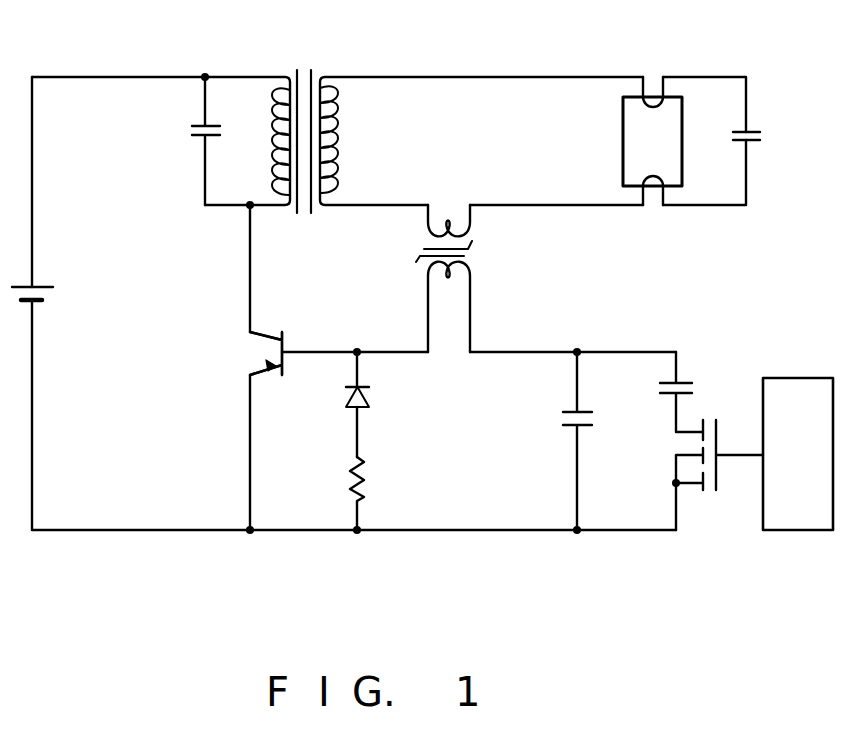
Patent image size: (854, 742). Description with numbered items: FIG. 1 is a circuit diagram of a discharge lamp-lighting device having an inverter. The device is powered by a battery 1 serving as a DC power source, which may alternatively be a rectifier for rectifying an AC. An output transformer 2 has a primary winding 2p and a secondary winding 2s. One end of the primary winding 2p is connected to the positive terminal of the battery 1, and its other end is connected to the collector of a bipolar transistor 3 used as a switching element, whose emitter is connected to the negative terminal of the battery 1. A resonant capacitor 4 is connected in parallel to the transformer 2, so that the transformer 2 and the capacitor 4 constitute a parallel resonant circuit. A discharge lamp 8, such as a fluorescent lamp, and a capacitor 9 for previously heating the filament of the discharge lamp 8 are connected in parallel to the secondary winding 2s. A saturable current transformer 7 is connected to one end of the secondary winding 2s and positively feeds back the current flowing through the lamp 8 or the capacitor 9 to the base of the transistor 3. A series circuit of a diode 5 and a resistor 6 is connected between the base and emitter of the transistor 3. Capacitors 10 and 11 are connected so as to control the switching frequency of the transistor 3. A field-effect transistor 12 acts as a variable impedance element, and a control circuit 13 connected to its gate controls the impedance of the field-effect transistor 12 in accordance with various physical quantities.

The battery 1 is at (47, 294).
The output transformer 2 is at (307, 115).
The primary winding 2p is at (258, 164).
The secondary winding 2s is at (337, 160).
The bipolar transistor 3 is at (252, 349).
The resonant capacitor 4 is at (190, 137).
The diode 5 is at (372, 397).
The resistor 6 is at (366, 478).
The saturable current transformer 7 is at (474, 249).
The discharge lamp 8 is at (659, 72).
The capacitor 9 is at (762, 136).
The capacitor 10 is at (564, 424).
The capacitor 11 is at (694, 389).
The field effect transistor 12 is at (713, 497).
The control circuit 13 is at (793, 378).